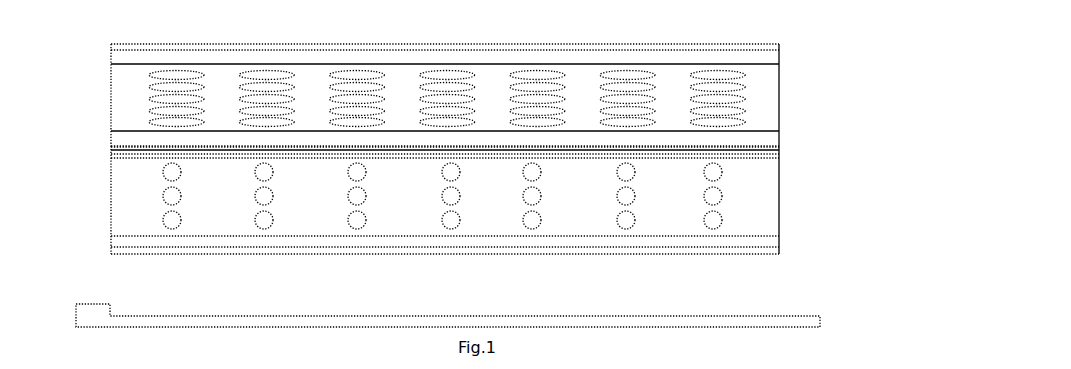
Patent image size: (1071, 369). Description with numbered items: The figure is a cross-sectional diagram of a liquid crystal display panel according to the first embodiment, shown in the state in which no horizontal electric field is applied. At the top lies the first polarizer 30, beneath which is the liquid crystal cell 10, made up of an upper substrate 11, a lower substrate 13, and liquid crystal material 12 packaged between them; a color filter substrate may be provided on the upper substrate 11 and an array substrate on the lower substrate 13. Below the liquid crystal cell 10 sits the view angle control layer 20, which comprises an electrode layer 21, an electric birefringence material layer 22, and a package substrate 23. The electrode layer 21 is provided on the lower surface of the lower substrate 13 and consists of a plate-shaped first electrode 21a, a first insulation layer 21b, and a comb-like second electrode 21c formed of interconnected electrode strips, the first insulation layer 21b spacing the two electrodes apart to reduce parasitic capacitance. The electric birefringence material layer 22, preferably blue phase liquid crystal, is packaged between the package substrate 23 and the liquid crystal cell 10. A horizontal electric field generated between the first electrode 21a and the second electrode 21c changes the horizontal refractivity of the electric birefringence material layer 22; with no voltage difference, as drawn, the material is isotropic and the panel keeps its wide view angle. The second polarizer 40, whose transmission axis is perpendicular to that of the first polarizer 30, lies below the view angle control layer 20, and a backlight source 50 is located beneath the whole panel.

The liquid crystal cell 10 is at (847, 65).
The upper substrate 11 is at (775, 59).
The liquid crystal material 12 is at (778, 92).
The lower substrate 13 is at (775, 137).
The view angle control layer 20 is at (904, 187).
The electrode layer 21 is at (865, 160).
The first electrode 21a is at (777, 148).
The first insulation layer 21b is at (777, 152).
The second electrode 21c is at (777, 156).
The electric birefringence material layer 22 is at (768, 205).
The package substrate 23 is at (772, 244).
The first polarizer 30 is at (735, 48).
The second polarizer 40 is at (760, 254).
The backlight source 50 is at (535, 320).